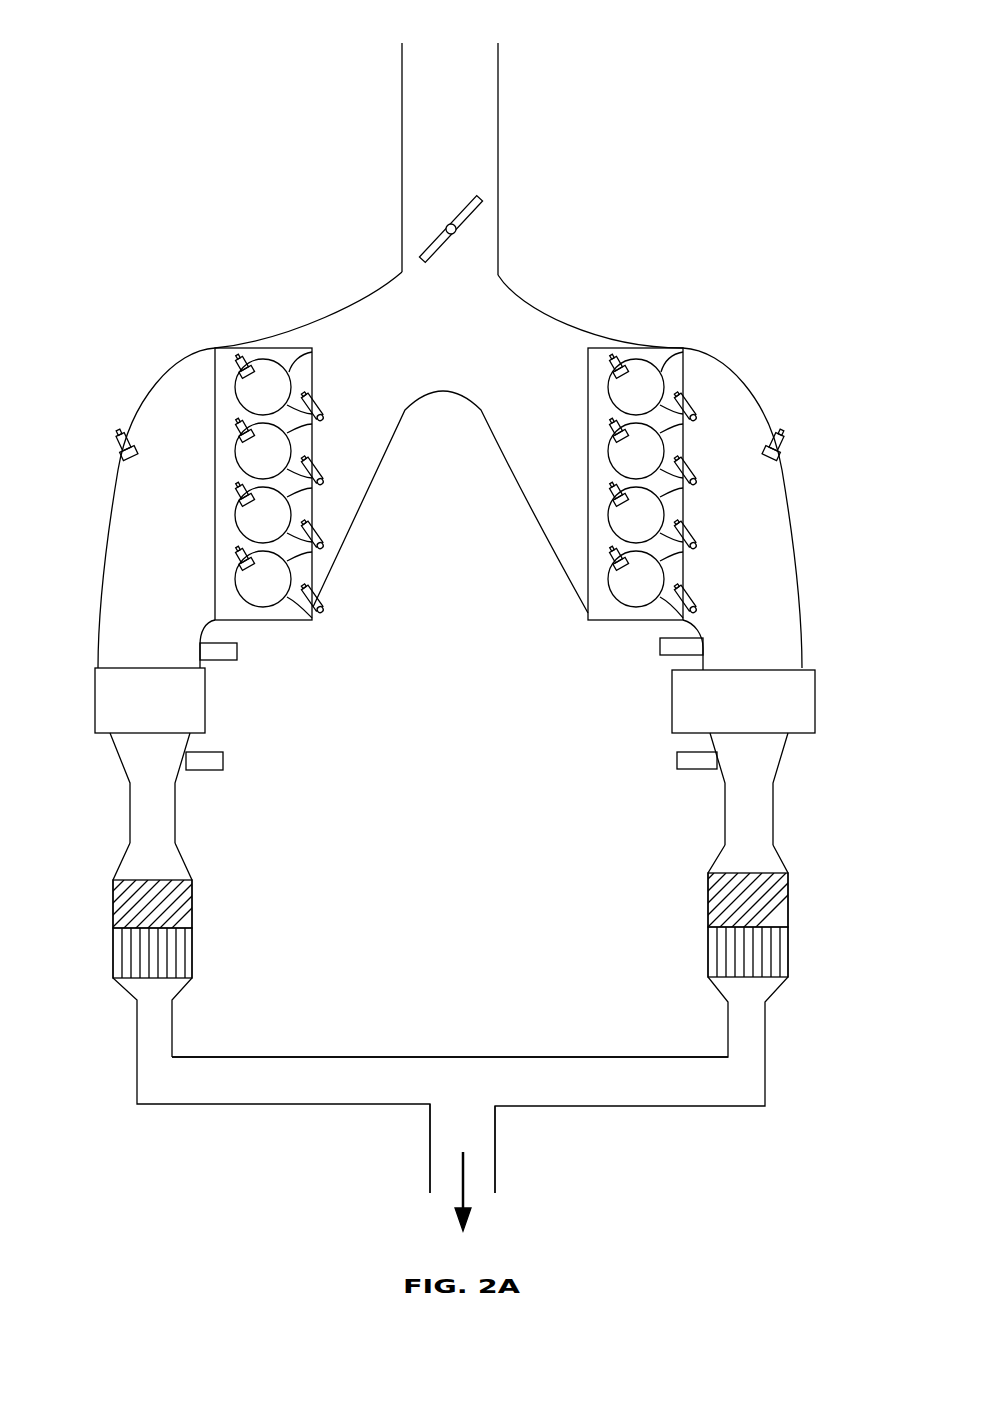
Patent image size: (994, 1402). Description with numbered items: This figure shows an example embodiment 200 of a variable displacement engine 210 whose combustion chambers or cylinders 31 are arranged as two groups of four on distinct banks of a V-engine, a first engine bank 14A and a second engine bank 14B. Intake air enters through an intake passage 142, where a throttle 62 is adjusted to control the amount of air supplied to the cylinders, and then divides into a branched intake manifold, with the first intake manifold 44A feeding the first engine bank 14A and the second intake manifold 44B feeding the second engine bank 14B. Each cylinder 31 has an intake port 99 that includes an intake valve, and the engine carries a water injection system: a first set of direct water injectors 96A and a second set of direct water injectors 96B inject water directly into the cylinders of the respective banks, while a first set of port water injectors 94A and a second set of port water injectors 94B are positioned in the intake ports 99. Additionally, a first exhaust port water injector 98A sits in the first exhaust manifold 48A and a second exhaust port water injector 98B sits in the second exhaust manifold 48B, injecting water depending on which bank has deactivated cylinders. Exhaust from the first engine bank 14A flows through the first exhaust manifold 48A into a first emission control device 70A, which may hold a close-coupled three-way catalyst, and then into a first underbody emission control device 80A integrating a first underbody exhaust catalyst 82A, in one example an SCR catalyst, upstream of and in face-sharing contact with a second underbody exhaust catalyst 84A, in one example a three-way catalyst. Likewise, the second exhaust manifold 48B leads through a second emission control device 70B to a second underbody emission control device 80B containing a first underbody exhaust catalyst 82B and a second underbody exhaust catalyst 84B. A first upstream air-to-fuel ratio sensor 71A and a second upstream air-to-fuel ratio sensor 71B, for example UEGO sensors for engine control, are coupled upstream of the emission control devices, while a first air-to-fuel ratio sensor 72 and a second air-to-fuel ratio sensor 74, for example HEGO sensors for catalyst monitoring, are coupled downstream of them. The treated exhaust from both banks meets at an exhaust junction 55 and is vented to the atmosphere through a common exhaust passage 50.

The example embodiment of engine system 200 is at (740, 72).
The variable displacement engine 210 is at (207, 198).
The intake passage 142 is at (462, 91).
The throttle 62 is at (432, 236).
The second engine bank 14B is at (252, 348).
The first engine bank 14A is at (622, 348).
The second set of direct water injectors 96B is at (236, 362).
The first set of direct water injectors 96A is at (614, 360).
The intake port 99 is at (312, 365).
The second intake manifold 44B is at (362, 388).
The first intake manifold 44A is at (571, 388).
The second set of port water injectors 94B is at (320, 428).
The first set of port water injectors 94A is at (692, 428).
The second exhaust port water injector 98B is at (117, 443).
The first exhaust port water injector 98A is at (784, 443).
The second exhaust manifold 48B is at (167, 658).
The first exhaust manifold 48A is at (765, 658).
The second emission control device 70B is at (166, 710).
The first emission control device 70A is at (760, 710).
The cylinder 31 is at (266, 602).
The first upstream air-to-fuel ratio sensor 71A is at (222, 662).
The second upstream air-to-fuel ratio sensor 71B is at (660, 648).
The second air-to-fuel ratio sensor 74 is at (216, 754).
The first air-to-fuel ratio sensor 72 is at (677, 758).
The second underbody emission control device 80B is at (188, 862).
The first underbody emission control device 80A is at (711, 862).
The first underbody exhaust catalyst 82B is at (188, 905).
The first underbody exhaust catalyst 82A is at (711, 905).
The second underbody exhaust catalyst 84B is at (188, 955).
The second underbody exhaust catalyst 84A is at (711, 955).
The exhaust junction 55 is at (465, 1090).
The common exhaust passage 50 is at (430, 1180).